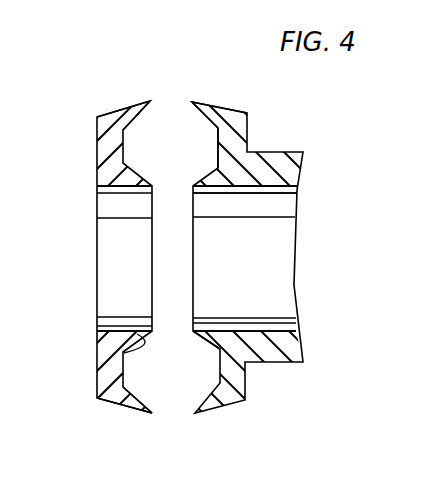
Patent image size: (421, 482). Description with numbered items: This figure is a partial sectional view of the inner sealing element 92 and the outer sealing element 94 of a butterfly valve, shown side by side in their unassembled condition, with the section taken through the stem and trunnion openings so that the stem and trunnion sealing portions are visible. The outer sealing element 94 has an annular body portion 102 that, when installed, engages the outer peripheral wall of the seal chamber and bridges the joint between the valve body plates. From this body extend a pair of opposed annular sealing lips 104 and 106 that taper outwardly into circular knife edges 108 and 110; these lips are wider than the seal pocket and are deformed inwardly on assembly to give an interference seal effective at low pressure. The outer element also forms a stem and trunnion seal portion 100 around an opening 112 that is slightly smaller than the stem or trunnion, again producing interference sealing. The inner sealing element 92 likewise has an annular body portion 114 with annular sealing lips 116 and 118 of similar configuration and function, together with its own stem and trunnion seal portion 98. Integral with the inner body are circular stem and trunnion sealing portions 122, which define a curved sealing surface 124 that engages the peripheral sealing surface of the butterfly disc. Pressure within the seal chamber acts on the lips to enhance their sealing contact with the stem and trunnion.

The inner sealing element 92 is at (247, 133).
The outer sealing element 94 is at (98, 155).
The stem and trunnion seal portion 98 is at (201, 334).
The stem and trunnion seal portion 100 is at (125, 350).
The annular body portion 102 is at (103, 373).
The annular sealing lip 104 is at (123, 406).
The annular sealing lip 106 is at (132, 107).
The circular knife edge 108 is at (155, 414).
The circular knife edge 110 is at (150, 100).
The opening 112 is at (110, 326).
The annular body portion 114 is at (218, 152).
The annular sealing lip 116 is at (212, 401).
The annular sealing lip 118 is at (203, 113).
The stem and trunnion sealing portion 122 is at (296, 168).
The curved sealing surface 124 is at (300, 183).